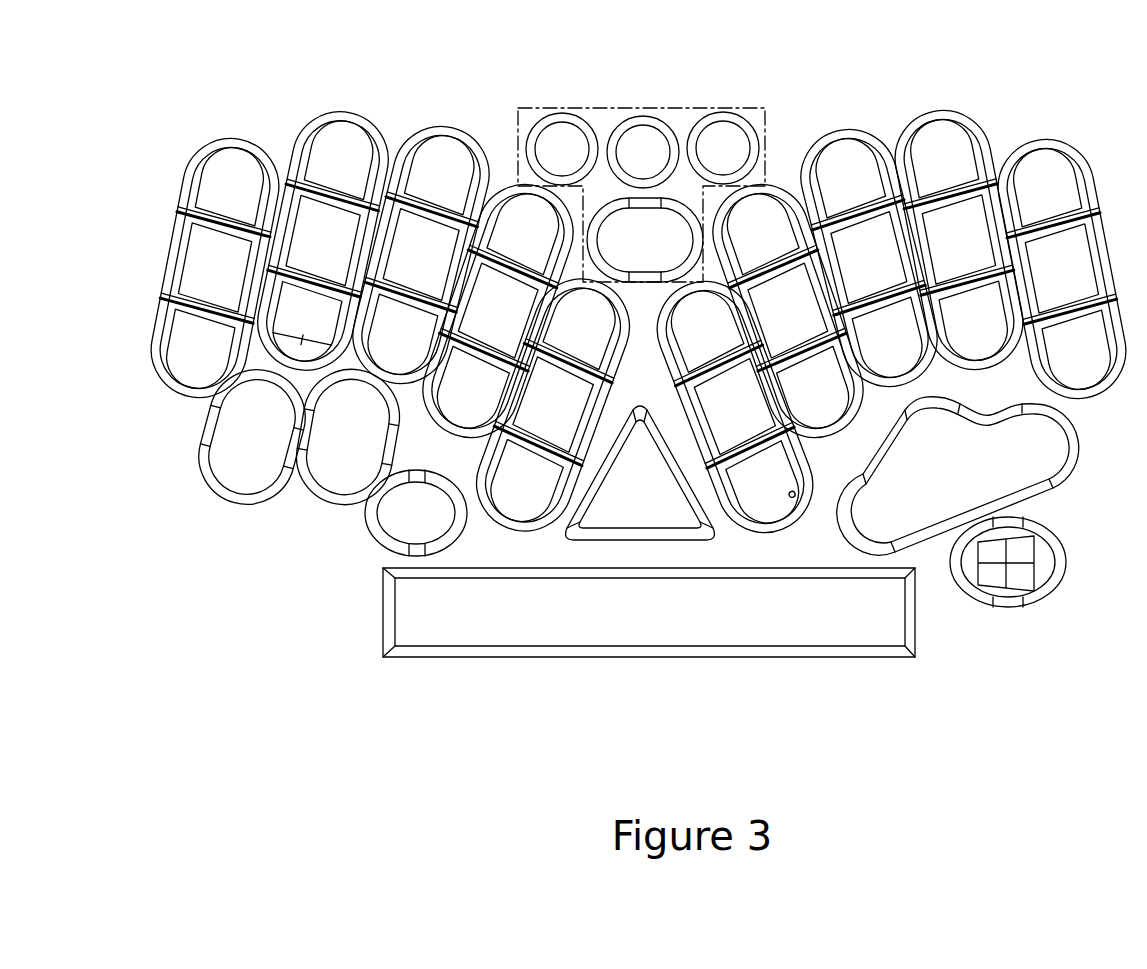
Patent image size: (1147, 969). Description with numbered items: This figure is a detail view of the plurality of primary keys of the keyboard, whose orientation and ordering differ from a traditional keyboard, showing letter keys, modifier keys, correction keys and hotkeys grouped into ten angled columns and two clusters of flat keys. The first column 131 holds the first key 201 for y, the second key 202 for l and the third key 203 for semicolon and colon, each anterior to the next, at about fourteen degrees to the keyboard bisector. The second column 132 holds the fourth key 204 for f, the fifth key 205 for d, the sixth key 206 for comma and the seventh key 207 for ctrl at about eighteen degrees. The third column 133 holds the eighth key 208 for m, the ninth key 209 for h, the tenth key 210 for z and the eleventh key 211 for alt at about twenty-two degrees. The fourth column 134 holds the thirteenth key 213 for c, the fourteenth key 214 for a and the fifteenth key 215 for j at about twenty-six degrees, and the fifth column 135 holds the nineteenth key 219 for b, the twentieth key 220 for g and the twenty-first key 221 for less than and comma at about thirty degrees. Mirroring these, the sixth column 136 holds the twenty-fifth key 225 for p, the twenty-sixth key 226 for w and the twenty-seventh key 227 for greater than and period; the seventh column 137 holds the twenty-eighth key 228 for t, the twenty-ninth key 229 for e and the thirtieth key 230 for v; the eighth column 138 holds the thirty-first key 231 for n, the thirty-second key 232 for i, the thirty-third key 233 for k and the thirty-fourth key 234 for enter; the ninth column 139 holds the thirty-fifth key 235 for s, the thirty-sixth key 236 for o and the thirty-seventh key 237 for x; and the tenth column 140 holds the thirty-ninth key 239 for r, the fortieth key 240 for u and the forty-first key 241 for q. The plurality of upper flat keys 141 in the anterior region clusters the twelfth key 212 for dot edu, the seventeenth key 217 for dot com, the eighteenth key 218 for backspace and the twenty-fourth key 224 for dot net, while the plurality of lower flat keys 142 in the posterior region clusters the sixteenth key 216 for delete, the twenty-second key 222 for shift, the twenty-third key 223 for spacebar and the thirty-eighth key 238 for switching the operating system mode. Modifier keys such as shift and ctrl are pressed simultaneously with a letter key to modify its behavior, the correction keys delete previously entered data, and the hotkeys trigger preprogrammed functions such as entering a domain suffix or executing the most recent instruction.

The first column 131 is at (256, 128).
The second column 132 is at (362, 108).
The third column 133 is at (470, 120).
The fourth column 134 is at (432, 425).
The fifth column 135 is at (512, 523).
The sixth column 136 is at (785, 526).
The seventh column 137 is at (830, 435).
The eighth column 138 is at (816, 120).
The ninth column 139 is at (925, 108).
The tenth column 140 is at (1046, 130).
The plurality of upper flat keys 141 is at (690, 108).
The plurality of lower flat keys 142 is at (383, 612).
The first key 201 is at (231, 184).
The second key 202 is at (215, 267).
The third key 203 is at (196, 351).
The fourth key 204 is at (341, 157).
The fifth key 205 is at (323, 241).
The sixth key 206 is at (305, 324).
The seventh key 207 is at (252, 437).
The eighth key 208 is at (442, 173).
The ninth key 209 is at (420, 255).
The tenth key 210 is at (400, 337).
The eleventh key 211 is at (348, 437).
The twelfth key 212 is at (562, 148).
The thirteenth key 213 is at (526, 231).
The fourteenth key 214 is at (495, 310).
The fifteenth key 215 is at (470, 391).
The sixteenth key 216 is at (416, 513).
The seventeenth key 217 is at (643, 152).
The eighteenth key 218 is at (645, 240).
The nineteenth key 219 is at (582, 325).
The twentieth key 220 is at (553, 404).
The twenty-first key 221 is at (520, 483).
The twenty-second key 222 is at (640, 473).
The twenty-third key 223 is at (649, 612).
The twenty-fourth key 224 is at (723, 148).
The twenty-fifth key 225 is at (704, 327).
The twenty-sixth key 226 is at (735, 407).
The twenty-seventh key 227 is at (763, 485).
The twenty-eighth key 228 is at (760, 230).
The twenty-ninth key 229 is at (788, 310).
The thirtieth key 230 is at (815, 391).
The thirty-first key 231 is at (848, 176).
The thirty-second key 232 is at (868, 258).
The thirty-third key 233 is at (890, 339).
The thirty-fourth key 234 is at (958, 476).
The thirty-fifth key 235 is at (942, 156).
The thirty-sixth key 236 is at (959, 239).
The thirty-seventh key 237 is at (966, 323).
The thirty-eighth key 238 is at (1020, 540).
The thirty-ninth key 239 is at (1045, 186).
The fortieth key 240 is at (1062, 268).
The forty-first key 241 is at (1078, 351).